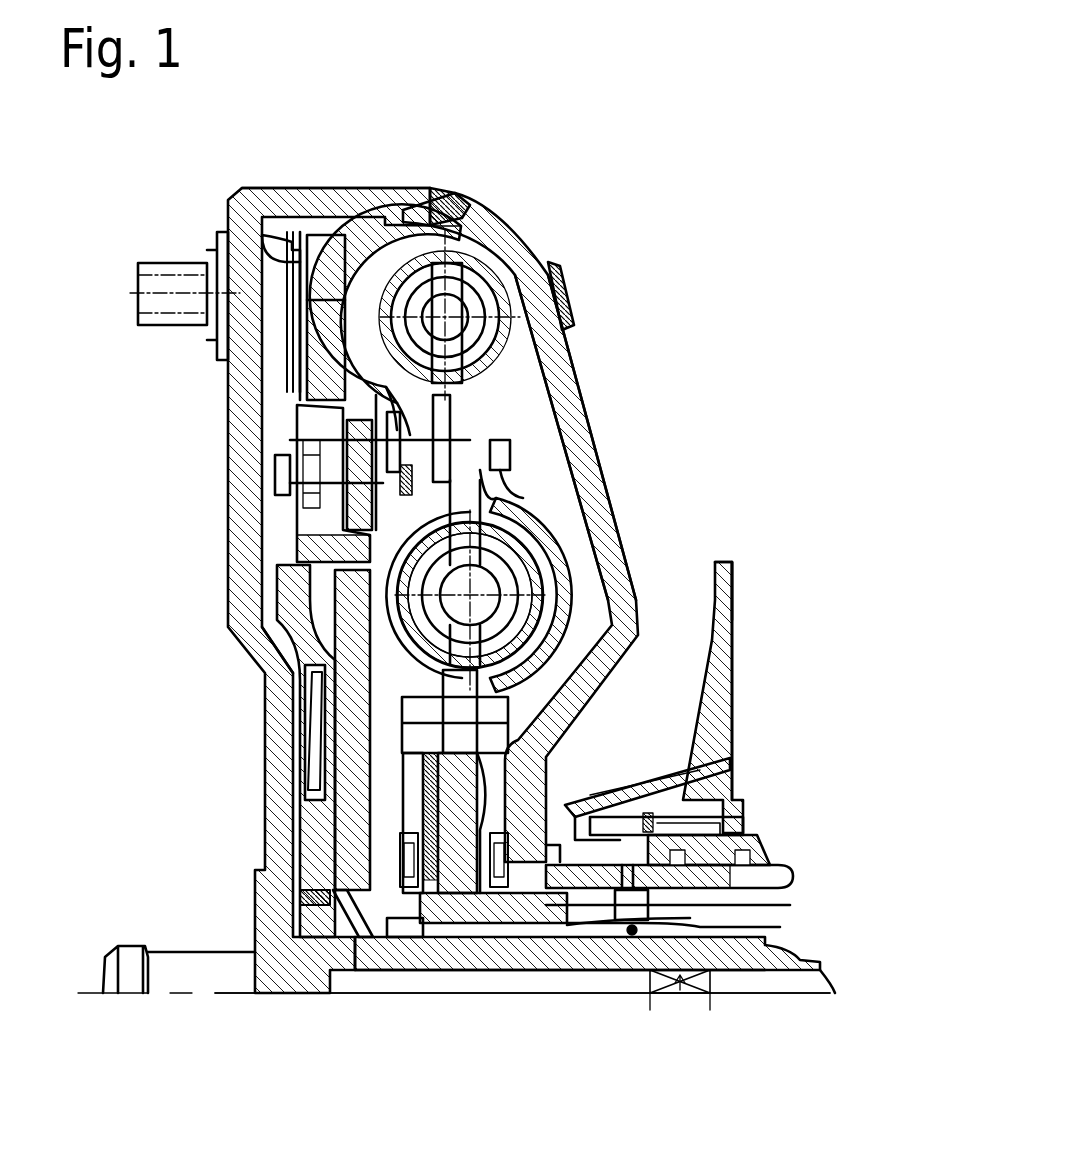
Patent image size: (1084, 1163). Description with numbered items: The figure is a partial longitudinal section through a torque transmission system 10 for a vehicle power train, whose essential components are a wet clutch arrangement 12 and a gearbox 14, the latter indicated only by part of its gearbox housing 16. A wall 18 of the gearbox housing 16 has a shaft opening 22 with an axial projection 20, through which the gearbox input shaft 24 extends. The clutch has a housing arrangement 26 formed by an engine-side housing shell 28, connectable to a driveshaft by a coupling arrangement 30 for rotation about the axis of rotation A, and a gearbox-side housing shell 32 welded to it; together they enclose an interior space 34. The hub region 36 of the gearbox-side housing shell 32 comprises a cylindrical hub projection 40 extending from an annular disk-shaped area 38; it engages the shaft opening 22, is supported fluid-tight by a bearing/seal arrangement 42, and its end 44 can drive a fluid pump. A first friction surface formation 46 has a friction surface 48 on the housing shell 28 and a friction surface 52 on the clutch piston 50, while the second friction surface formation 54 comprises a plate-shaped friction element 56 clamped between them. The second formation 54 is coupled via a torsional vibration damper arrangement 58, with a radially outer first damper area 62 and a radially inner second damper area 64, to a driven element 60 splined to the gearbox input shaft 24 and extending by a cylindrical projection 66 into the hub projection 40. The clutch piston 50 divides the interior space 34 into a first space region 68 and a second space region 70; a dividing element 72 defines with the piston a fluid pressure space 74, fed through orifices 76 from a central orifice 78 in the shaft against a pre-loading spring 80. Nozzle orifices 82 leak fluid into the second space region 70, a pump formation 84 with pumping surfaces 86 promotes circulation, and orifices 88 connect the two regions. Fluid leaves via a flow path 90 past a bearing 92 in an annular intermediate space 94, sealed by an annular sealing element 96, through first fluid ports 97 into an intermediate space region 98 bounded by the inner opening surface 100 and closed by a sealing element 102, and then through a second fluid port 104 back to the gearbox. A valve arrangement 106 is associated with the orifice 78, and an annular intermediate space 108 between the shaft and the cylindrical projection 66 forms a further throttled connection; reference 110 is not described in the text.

The torque transmission system 10 is at (552, 136).
The wet clutch arrangement 12 is at (302, 128).
The gearbox 14 is at (762, 540).
The gearbox housing 16 is at (735, 620).
The wall 18 is at (724, 650).
The axial projection 20 is at (648, 790).
The shaft opening 22 is at (760, 820).
The gearbox input shaft 24 is at (548, 990).
The housing arrangement 26 is at (403, 188).
The engine-side housing shell 28 is at (262, 520).
The coupling arrangement 30 is at (160, 268).
The gearbox-side housing shell 32 is at (583, 382).
The interior space 34 is at (400, 255).
The hub region 36 is at (628, 592).
The annular disk-shaped area 38 is at (592, 495).
The hub projection 40 is at (520, 900).
The bearing/seal arrangement 42 is at (742, 800).
The end of the hub projection 44 is at (788, 866).
The first friction surface formation 46 is at (272, 369).
The friction surface 48 is at (312, 280).
The clutch piston 50 is at (262, 645).
The friction surface 52 is at (300, 345).
The second friction surface formation 54 is at (290, 232).
The plate-shaped friction element 56 is at (238, 232).
The torsional vibration damper arrangement 58 is at (533, 400).
The driven element 60 is at (418, 910).
The first torsional vibration damper area 62 is at (497, 268).
The second torsional vibration damper area 64 is at (548, 515).
The cylindrical projection 66 is at (620, 975).
The first space region 68 is at (528, 292).
The second space region 70 is at (265, 590).
The dividing element 72 is at (375, 800).
The fluid pressure space 74 is at (315, 760).
The orifices 76 is at (312, 945).
The orifice 78 is at (522, 1000).
The pre-loading spring 80 is at (325, 700).
The nozzle orifices 82 is at (292, 888).
The pump formation 84 is at (268, 428).
The pumping surfaces 86 is at (275, 470).
The orifices 88 is at (270, 535).
The flow path 90 is at (462, 902).
The bearing 92 is at (392, 930).
The annular intermediate space 94 is at (592, 915).
The annular sealing element 96 is at (640, 906).
The first fluid ports 97 is at (650, 925).
The intermediate space region 98 is at (618, 800).
The inner opening surface 100 is at (678, 810).
The sealing element 102 is at (543, 826).
The second fluid port 104 is at (700, 760).
The valve arrangement 106 is at (690, 1015).
The annular intermediate space 108 is at (676, 1000).
The pointer 110 is at (650, 1010).
The axis of rotation A is at (230, 1000).